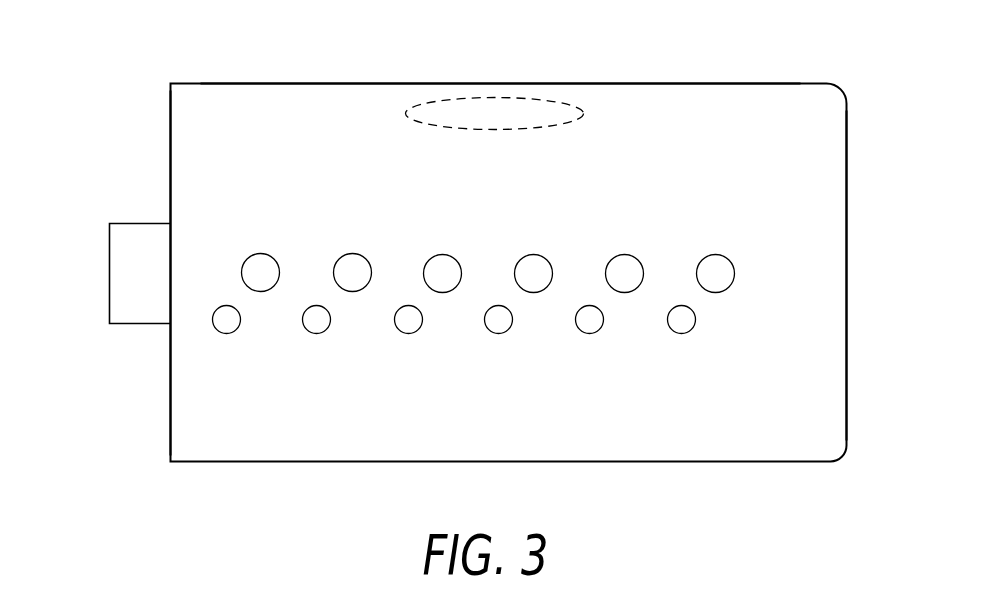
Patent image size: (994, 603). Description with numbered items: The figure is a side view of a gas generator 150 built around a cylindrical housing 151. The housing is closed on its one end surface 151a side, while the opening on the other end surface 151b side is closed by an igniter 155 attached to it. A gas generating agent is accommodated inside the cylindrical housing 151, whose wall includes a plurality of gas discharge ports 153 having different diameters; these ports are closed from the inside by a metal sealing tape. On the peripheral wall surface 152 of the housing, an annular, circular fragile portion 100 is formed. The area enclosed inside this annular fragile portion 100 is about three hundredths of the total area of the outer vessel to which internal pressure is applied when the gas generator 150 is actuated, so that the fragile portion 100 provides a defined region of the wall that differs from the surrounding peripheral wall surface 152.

The annular fragile portion 100 is at (580, 118).
The gas generator 150 is at (628, 72).
The cylindrical housing 151 is at (375, 81).
The one end surface 151a is at (846, 195).
The other end surface 151b is at (167, 113).
The peripheral wall surface 152 is at (249, 105).
The gas discharge ports 153 is at (347, 263).
The igniter 155 is at (142, 242).